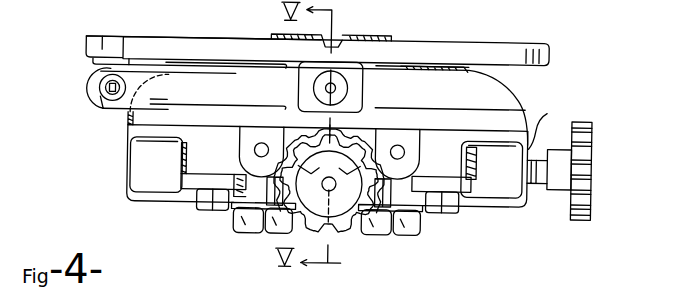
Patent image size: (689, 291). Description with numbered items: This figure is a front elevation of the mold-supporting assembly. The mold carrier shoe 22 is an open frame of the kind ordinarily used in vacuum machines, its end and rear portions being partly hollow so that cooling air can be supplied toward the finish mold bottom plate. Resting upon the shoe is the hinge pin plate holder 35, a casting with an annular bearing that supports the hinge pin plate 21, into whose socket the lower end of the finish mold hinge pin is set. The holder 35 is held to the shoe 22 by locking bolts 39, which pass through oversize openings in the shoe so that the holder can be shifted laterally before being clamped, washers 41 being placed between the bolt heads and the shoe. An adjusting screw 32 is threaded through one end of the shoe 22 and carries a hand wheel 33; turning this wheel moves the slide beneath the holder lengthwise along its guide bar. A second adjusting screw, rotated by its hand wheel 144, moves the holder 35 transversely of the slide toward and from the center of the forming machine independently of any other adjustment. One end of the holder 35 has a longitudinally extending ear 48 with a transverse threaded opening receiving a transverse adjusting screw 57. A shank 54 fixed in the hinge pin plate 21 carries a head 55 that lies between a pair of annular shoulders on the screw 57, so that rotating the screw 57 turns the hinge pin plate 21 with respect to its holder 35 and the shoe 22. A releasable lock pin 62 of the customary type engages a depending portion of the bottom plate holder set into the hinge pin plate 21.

The hinge pin plate 21 is at (443, 43).
The mold carrier shoe 22 is at (554, 124).
The adjusting screw 32 is at (545, 188).
The hand wheel 33 is at (593, 192).
The hinge pin plate holder 35 is at (507, 94).
The locking bolts 39 is at (202, 200).
The washers 41 is at (220, 184).
The longitudinally extending ear 48 is at (103, 116).
The shank 54 is at (100, 51).
The head 55 is at (95, 86).
The transverse adjusting screw 57 is at (105, 94).
The releasable lock pin 62 is at (345, 88).
The hand wheel 144 is at (352, 220).